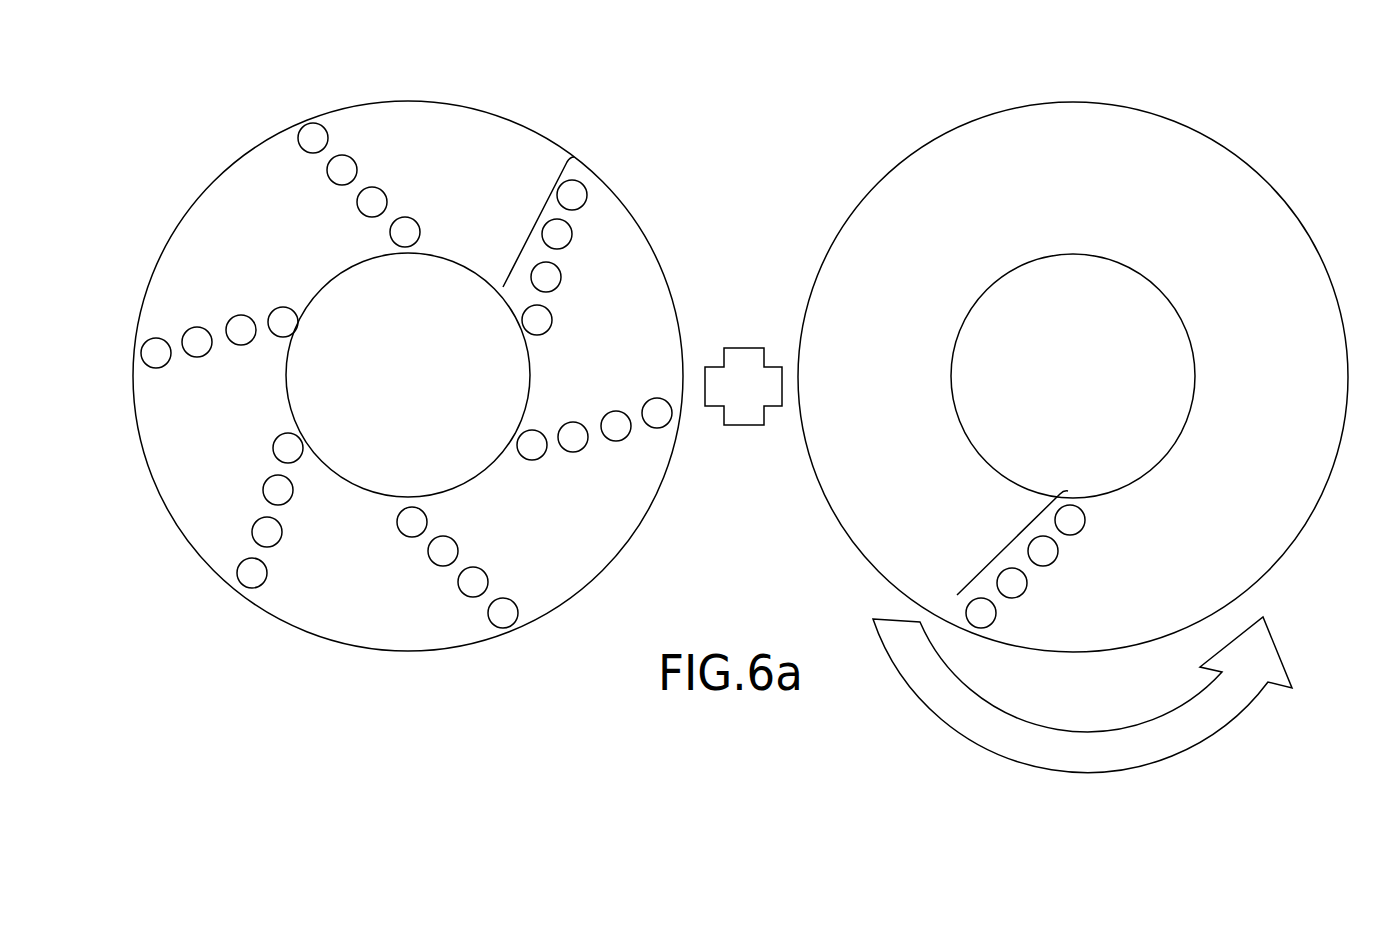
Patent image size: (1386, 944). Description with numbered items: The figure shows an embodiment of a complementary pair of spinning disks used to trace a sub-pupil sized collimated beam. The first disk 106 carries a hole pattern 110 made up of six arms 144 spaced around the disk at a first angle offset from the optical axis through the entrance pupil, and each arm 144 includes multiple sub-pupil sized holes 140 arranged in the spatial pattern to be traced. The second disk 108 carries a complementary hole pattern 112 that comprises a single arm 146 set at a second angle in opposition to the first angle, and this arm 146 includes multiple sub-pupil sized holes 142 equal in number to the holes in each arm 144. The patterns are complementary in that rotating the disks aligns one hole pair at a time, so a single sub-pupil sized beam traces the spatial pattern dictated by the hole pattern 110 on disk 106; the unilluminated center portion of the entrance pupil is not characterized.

The disk 106 is at (330, 112).
The disk 108 is at (1028, 103).
The hole pattern 110 is at (268, 167).
The hole pattern 112 is at (900, 571).
The hole 140 is at (573, 234).
The hole 142 is at (1024, 594).
The arm 144 is at (530, 224).
The arm 146 is at (1007, 542).